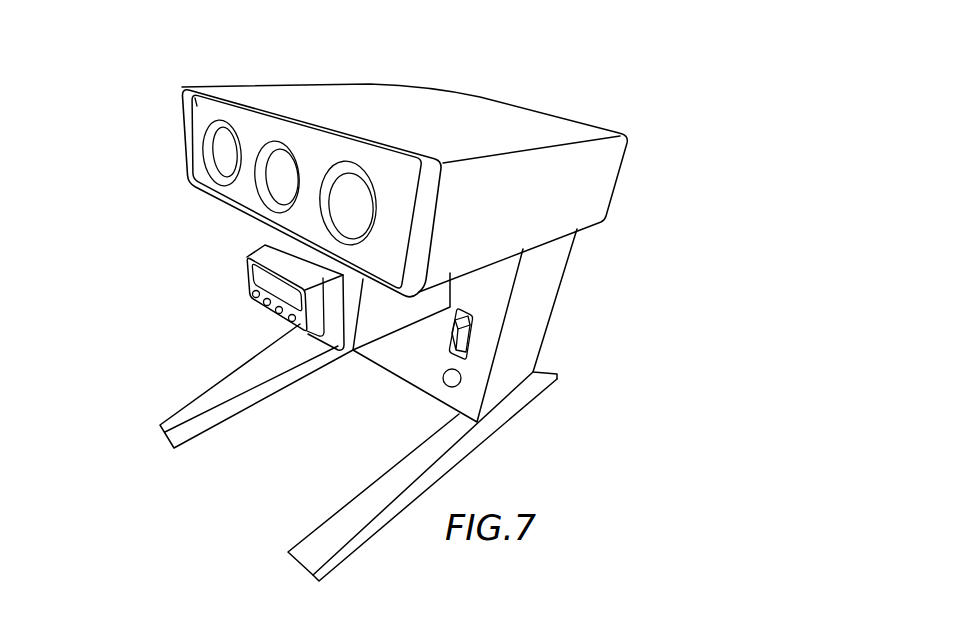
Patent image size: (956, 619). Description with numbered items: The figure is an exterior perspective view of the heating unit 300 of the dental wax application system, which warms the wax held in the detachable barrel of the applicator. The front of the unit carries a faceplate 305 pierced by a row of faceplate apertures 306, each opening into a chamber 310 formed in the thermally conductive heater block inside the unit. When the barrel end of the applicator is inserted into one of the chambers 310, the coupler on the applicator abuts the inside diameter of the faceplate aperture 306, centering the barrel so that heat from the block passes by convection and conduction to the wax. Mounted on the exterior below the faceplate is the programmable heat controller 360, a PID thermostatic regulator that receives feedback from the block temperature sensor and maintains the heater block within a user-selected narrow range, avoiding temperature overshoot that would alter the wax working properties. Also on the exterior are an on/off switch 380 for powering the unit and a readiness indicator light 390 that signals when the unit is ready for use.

The heating unit 300 is at (510, 88).
The faceplate 305 is at (189, 85).
The faceplate aperture 306 is at (213, 125).
The chamber 310 is at (213, 150).
The thermostat/regulator 360 is at (247, 268).
The on/off switch 380 is at (453, 341).
The readiness indicator light 390 is at (443, 387).